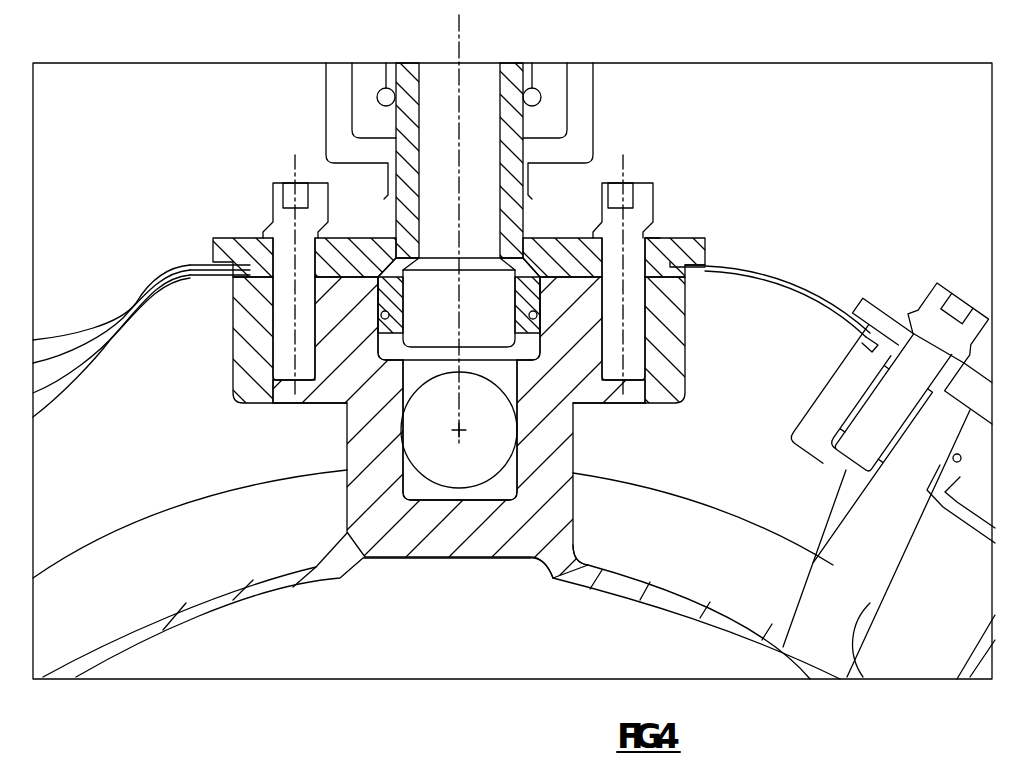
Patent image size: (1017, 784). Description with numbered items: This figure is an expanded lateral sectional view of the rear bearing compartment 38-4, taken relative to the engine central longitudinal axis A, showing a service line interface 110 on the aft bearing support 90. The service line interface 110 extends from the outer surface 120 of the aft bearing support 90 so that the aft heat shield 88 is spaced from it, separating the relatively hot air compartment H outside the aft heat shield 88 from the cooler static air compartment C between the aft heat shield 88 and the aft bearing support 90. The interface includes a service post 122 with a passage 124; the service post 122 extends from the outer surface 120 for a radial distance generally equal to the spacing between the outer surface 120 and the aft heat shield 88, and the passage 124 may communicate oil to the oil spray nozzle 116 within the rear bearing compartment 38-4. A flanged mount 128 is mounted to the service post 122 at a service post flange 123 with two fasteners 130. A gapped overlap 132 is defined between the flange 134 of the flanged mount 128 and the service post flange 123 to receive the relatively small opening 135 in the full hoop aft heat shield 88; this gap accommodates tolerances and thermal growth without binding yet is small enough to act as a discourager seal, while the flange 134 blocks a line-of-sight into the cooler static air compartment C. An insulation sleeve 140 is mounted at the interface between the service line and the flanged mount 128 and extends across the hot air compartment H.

The insulation sleeve 140 is at (597, 95).
The service line interface 110 is at (787, 200).
The service post flange 123 is at (686, 288).
The gapped overlap 132 is at (228, 238).
The service post 122 is at (694, 344).
The fasteners 130 is at (272, 182).
The oil spray nozzle 116 is at (476, 474).
The passage 124 is at (400, 470).
The flange 134 is at (213, 254).
The aft heat shield 88 is at (797, 282).
The opening 135 is at (662, 240).
The flanged mount 128 is at (681, 233).
The aft bearing support 90 is at (622, 603).
The outer surface 120 is at (660, 515).
The rear bearing compartment 38-4 is at (470, 645).
The hot air compartment H is at (99, 193).
The static air compartment C is at (214, 463).
The engine central longitudinal axis A is at (460, 780).